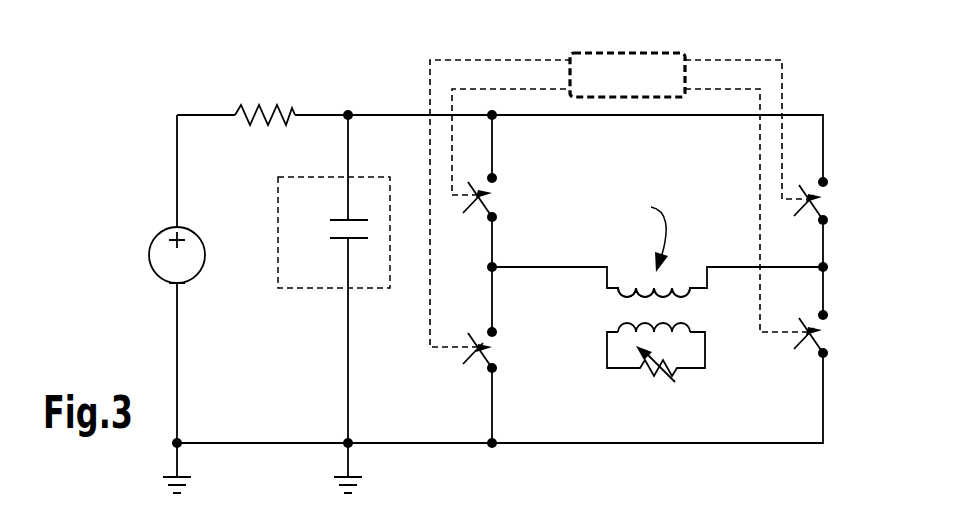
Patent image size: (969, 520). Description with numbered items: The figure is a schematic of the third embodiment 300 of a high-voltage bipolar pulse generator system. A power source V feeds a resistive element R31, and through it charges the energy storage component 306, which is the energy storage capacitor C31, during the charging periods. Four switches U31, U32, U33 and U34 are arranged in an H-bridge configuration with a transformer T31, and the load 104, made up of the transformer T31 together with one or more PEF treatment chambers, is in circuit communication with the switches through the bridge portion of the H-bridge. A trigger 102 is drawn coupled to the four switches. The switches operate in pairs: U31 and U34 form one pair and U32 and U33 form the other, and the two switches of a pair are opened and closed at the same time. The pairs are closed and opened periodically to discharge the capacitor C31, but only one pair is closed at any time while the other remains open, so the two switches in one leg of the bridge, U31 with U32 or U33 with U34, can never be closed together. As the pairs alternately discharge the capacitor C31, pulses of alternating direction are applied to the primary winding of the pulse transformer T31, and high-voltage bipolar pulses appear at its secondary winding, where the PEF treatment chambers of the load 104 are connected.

The third embodiment of high-voltage bipolar pulse generator system 300 is at (232, 66).
The trigger 102 is at (598, 53).
The energy storage component 306 is at (317, 279).
The load 104 is at (695, 373).
The resistive element R31 is at (265, 100).
The energy storage capacitor C31 is at (318, 290).
The transformer T31 is at (656, 245).
The switch U31 is at (507, 195).
The switch U32 is at (507, 347).
The switch U33 is at (838, 198).
The switch U34 is at (838, 331).
The power source V is at (179, 246).